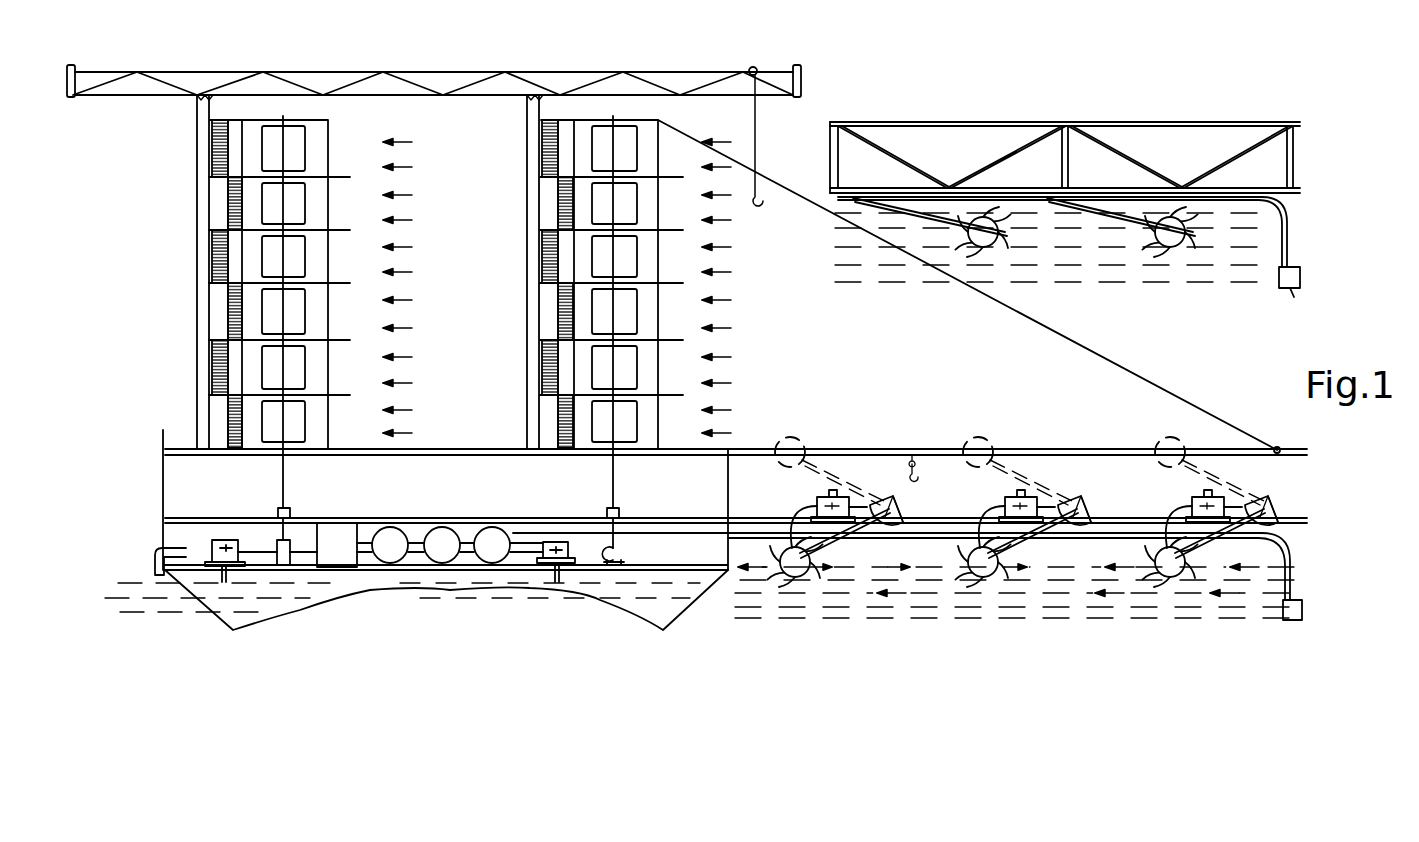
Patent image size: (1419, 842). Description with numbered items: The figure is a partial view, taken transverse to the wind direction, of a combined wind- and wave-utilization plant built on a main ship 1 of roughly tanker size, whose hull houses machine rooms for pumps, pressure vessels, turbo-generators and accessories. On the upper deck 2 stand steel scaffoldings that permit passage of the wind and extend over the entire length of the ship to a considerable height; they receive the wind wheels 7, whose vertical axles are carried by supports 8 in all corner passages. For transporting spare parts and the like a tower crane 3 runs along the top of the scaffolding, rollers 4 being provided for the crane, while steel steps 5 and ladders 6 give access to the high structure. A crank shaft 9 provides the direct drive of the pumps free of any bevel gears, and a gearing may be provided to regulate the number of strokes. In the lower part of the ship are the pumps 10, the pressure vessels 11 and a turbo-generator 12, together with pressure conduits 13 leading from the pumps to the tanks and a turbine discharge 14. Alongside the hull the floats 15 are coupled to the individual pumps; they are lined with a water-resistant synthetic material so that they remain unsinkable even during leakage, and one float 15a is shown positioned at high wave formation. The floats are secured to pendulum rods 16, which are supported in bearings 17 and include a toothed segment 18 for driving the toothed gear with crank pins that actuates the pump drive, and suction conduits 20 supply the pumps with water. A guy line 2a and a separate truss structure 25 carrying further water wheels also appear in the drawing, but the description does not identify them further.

The main ship 1 is at (175, 486).
The upper deck 2 is at (583, 301).
The guy cable 2a is at (1108, 360).
The tower crane 3 is at (160, 96).
The rollers 4 is at (527, 96).
The steel steps 5 is at (215, 243).
The ladders 6 is at (203, 310).
The wind wheels 7 is at (300, 155).
The supports 8 is at (620, 515).
The crank shaft 9 is at (622, 556).
The pumps 10 is at (560, 540).
The pressure vessels 11 is at (488, 533).
The turbo-generator 12 is at (337, 525).
The pressure conduits 13 is at (745, 535).
The turbine discharge 14 is at (160, 560).
The floats 15 is at (793, 545).
The float 15a is at (800, 440).
The pendulum rods 16 is at (985, 528).
The bearings 17 is at (1268, 510).
The toothed segment 18 is at (1092, 520).
The suction conduits 20 is at (555, 575).
The truss with water turbines 25 is at (1210, 178).